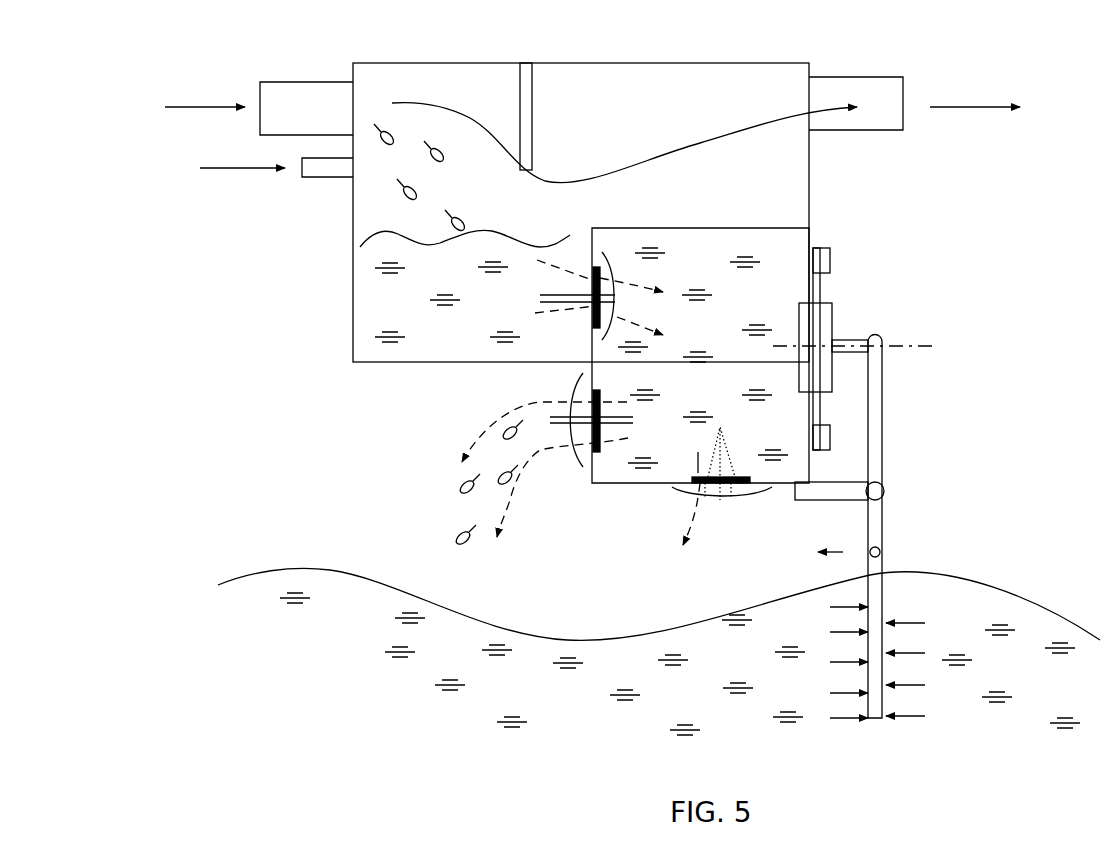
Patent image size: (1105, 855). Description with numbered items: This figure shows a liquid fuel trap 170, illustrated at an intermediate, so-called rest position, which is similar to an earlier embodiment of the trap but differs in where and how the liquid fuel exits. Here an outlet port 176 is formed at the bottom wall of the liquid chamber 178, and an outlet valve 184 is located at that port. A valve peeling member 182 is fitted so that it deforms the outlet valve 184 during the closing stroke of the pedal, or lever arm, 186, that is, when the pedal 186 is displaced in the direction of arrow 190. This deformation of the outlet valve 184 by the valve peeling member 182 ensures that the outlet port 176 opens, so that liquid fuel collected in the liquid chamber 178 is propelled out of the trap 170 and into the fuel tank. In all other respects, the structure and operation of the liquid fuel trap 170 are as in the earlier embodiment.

The liquid fuel trap 170 is at (305, 340).
The outlet port 176 is at (697, 478).
The liquid chamber 178 is at (813, 240).
The valve peeling member 182 is at (837, 480).
The outlet valve 184 is at (737, 493).
The pedal (lever arm) 186 is at (876, 515).
The arrow 190 is at (843, 552).